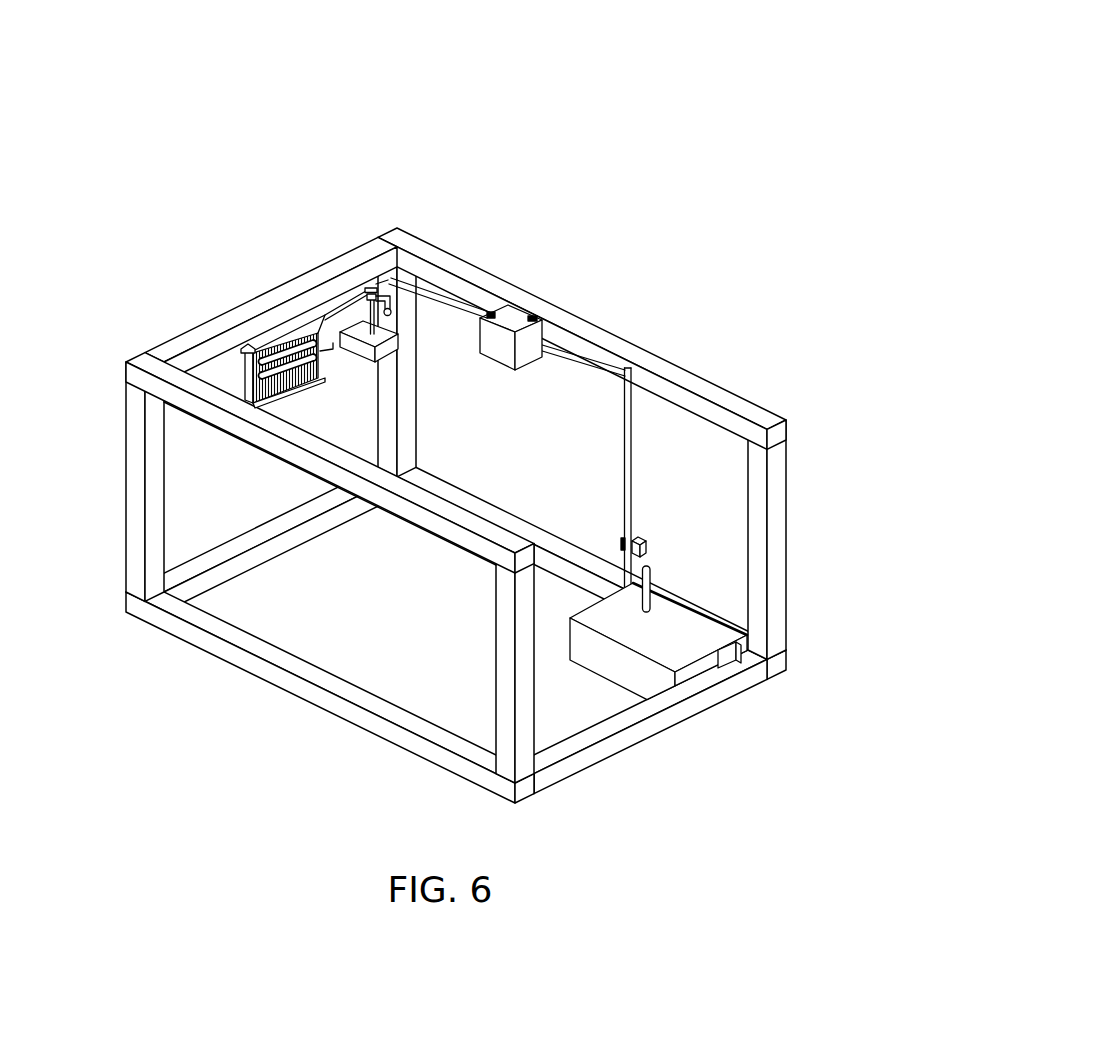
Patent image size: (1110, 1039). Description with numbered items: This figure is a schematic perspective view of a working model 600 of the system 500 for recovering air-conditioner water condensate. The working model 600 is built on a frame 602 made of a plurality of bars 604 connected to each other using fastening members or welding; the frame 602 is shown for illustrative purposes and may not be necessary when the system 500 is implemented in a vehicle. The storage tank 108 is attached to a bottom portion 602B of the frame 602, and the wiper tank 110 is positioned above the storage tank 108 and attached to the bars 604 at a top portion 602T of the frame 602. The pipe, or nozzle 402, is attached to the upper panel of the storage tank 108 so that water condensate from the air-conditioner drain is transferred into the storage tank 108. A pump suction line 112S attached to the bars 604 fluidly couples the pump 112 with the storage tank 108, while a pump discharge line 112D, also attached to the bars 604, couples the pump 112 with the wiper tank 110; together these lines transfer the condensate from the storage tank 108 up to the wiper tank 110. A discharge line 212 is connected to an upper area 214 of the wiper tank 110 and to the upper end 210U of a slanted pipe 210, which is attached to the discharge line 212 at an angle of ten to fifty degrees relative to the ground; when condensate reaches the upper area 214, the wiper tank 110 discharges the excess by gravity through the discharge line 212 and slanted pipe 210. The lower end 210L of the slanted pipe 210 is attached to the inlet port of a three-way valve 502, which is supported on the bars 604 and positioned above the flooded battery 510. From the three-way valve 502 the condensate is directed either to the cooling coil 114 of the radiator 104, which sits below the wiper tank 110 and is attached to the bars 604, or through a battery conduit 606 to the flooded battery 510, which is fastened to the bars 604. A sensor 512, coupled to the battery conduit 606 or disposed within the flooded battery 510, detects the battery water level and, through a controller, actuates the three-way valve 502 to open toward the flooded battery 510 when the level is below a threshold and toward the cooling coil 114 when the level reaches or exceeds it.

The system 500 is at (463, 418).
The working model 600 is at (463, 485).
The frame 602 is at (463, 515).
The top portion 602T is at (519, 400).
The bottom portion 602B is at (812, 652).
The bars 604 is at (134, 358).
The battery conduit 606 is at (485, 292).
The radiator 104 is at (285, 321).
The cooling coil 114 is at (298, 334).
The storage tank 108 is at (626, 665).
The wiper tank 110 is at (534, 317).
The pump 112 is at (620, 542).
The pump discharge line 112D is at (632, 400).
The pump suction line 112S is at (653, 552).
The slanted pipe 210 is at (392, 284).
The upper end 210U is at (380, 276).
The lower end 210L is at (372, 293).
The discharge line 212 is at (412, 284).
The upper area 214 is at (516, 320).
The nozzle 402 is at (657, 581).
The three-way valve 502 is at (384, 243).
The flooded battery 510 is at (361, 346).
The sensor 512 is at (383, 280).